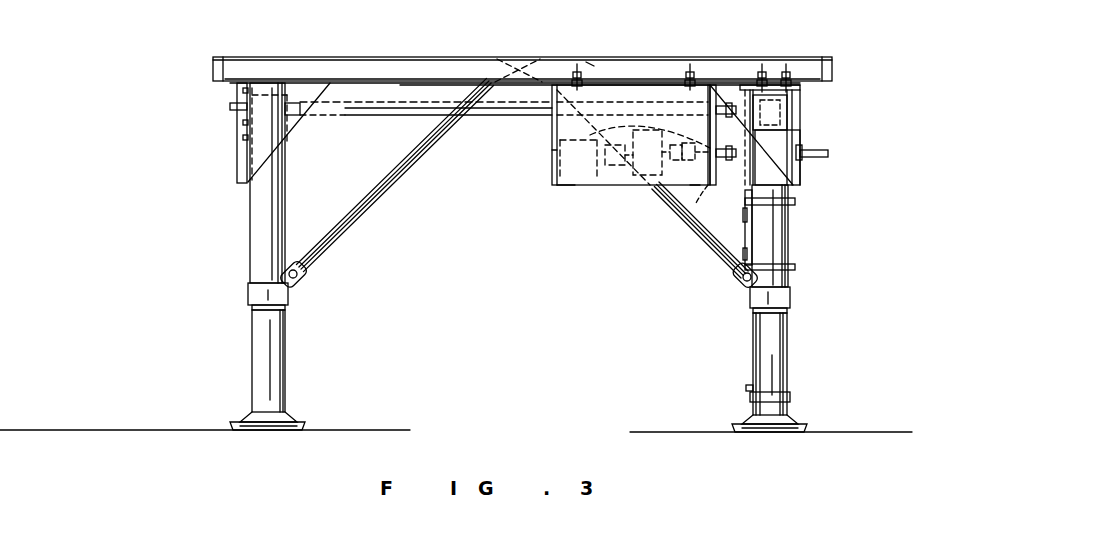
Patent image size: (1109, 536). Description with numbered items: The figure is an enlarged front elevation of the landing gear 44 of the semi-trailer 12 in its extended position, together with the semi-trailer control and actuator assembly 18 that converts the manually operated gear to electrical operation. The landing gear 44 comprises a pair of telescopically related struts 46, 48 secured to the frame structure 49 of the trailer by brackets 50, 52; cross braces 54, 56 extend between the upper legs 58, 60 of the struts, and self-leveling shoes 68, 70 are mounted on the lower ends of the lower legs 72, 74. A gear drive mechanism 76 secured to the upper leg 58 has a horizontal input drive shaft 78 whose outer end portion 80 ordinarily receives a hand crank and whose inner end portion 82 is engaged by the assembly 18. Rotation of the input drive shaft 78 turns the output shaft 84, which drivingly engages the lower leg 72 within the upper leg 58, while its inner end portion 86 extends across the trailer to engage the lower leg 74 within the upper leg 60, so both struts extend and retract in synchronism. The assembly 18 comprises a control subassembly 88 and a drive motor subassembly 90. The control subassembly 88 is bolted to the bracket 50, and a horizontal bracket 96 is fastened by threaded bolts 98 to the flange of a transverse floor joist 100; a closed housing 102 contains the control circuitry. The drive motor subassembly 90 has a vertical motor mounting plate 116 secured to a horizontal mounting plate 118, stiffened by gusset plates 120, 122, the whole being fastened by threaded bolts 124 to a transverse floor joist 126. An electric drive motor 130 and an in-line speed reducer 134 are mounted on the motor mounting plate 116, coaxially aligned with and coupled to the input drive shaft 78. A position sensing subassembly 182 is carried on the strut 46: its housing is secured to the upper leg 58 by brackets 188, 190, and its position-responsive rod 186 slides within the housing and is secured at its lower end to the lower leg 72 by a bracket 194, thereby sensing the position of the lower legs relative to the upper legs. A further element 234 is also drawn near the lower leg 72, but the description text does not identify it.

The semi-trailer 12 is at (522, 40).
The frame structure 49 is at (427, 52).
The upper leg 58 is at (525, 58).
The threaded bolts 124 is at (577, 72).
The transverse floor joist 126 is at (590, 64).
The horizontal mounting plate 118 is at (610, 92).
The transverse floor joist 100 is at (718, 70).
The threaded bolts 98 is at (762, 72).
The horizontal bracket 96 is at (787, 85).
The closed housing 102 is at (773, 103).
The output shaft 84 is at (790, 112).
The control subassembly 88 is at (785, 117).
The input drive shaft 78 is at (805, 150).
The outer end portion 80 is at (828, 155).
The bracket 50 is at (780, 160).
The bracket 188 is at (790, 200).
The landing gear 44 is at (765, 218).
The bracket 190 is at (790, 266).
The strut 46 is at (778, 278).
The position-responsive rod 186 is at (753, 322).
The lower leg 72 is at (775, 338).
The bracket 194 is at (748, 388).
The collar 234 is at (770, 395).
The self-leveling shoe 68 is at (805, 424).
The self-leveling shoe 70 is at (298, 422).
The lower leg 74 is at (265, 353).
The strut 48 is at (260, 240).
The upper leg 60 is at (265, 272).
The cross brace 56 is at (385, 195).
The inner end portion 86 is at (528, 110).
The bracket 52 is at (270, 142).
The gusset plate 122 is at (552, 168).
The drive motor subassembly 90 is at (570, 184).
The electric drive motor 130 is at (580, 188).
The motor mounting plate 116 is at (602, 178).
The in-line speed reducer 134 is at (638, 178).
The cross brace 54 is at (655, 185).
The gusset plate 120 is at (672, 200).
The semi-trailer control and actuator assembly 18 is at (689, 200).
The inner end portion 82 is at (700, 188).
The position sensing subassembly 182 is at (746, 230).
The gear drive mechanism 76 is at (720, 160).